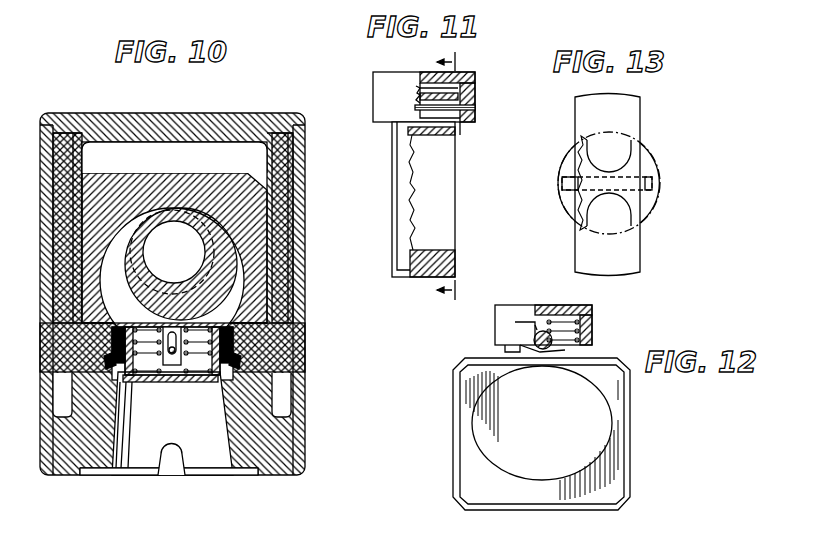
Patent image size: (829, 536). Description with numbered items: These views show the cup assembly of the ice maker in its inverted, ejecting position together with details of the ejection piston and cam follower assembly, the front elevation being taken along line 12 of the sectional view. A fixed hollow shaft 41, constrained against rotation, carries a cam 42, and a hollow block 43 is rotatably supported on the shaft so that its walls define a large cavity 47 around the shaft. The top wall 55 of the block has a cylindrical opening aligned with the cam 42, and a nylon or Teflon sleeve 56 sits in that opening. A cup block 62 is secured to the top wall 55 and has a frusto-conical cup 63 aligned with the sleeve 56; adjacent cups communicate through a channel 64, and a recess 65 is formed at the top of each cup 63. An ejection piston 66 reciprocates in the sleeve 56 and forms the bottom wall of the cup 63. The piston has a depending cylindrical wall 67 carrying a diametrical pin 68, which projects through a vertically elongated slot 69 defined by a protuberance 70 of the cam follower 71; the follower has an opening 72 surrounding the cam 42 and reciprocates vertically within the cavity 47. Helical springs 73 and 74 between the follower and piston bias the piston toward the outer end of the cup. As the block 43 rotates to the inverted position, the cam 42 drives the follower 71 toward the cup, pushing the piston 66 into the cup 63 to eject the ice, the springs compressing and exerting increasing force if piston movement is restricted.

In FIG. 11, the section line 12— 12 is at (460, 176).
In FIG. 10, the hollow tube or shaft 41 is at (172, 109).
In FIG. 10, the cam 42 is at (130, 268).
In FIG. 10, the hollow casing or block 43 is at (304, 170).
In FIG. 10, the cavity 47 is at (118, 152).
In FIG. 10, the top wall 55 is at (56, 352).
In FIG. 10, the sleeve or insert 56 is at (182, 353).
In FIG. 10, the cup block 62 is at (292, 443).
In FIG. 10, the cup or receptacle 63 is at (205, 452).
In FIG. 10, the channel 64 is at (172, 466).
In FIG. 10, the recess 65 is at (241, 480).
In FIG. 10, the ejection piston 66 is at (168, 382).
In FIG. 11, the ejection piston 66 is at (390, 97).
In FIG. 13, the ejection piston 66 is at (562, 183).
In FIG. 12, the ejection piston 66 is at (578, 306).
In FIG. 11, the depending cylindrical wall 67 is at (455, 98).
In FIG. 12, the depending cylindrical wall 67 is at (592, 316).
In FIG. 11, the pin 68 is at (475, 108).
In FIG. 12, the pin 68 is at (535, 326).
In FIG. 11, the slot 69 is at (448, 137).
In FIG. 12, the slot 69 is at (543, 350).
In FIG. 11, the protuberance 70 is at (460, 84).
In FIG. 13, the protuberance 70 is at (632, 172).
In FIG. 12, the protuberance 70 is at (540, 350).
In FIG. 10, the cam follower 71 is at (248, 173).
In FIG. 11, the cam follower 71 is at (450, 262).
In FIG. 13, the cam follower 71 is at (625, 118).
In FIG. 12, the cam follower 71 is at (605, 480).
In FIG. 10, the opening 72 is at (232, 235).
In FIG. 11, the opening 72 is at (445, 223).
In FIG. 12, the opening 72 is at (600, 425).
In FIG. 10, the helical spring 73 is at (188, 380).
In FIG. 10, the helical spring 74 is at (158, 378).
In FIG. 12, the helical spring 74 is at (585, 341).